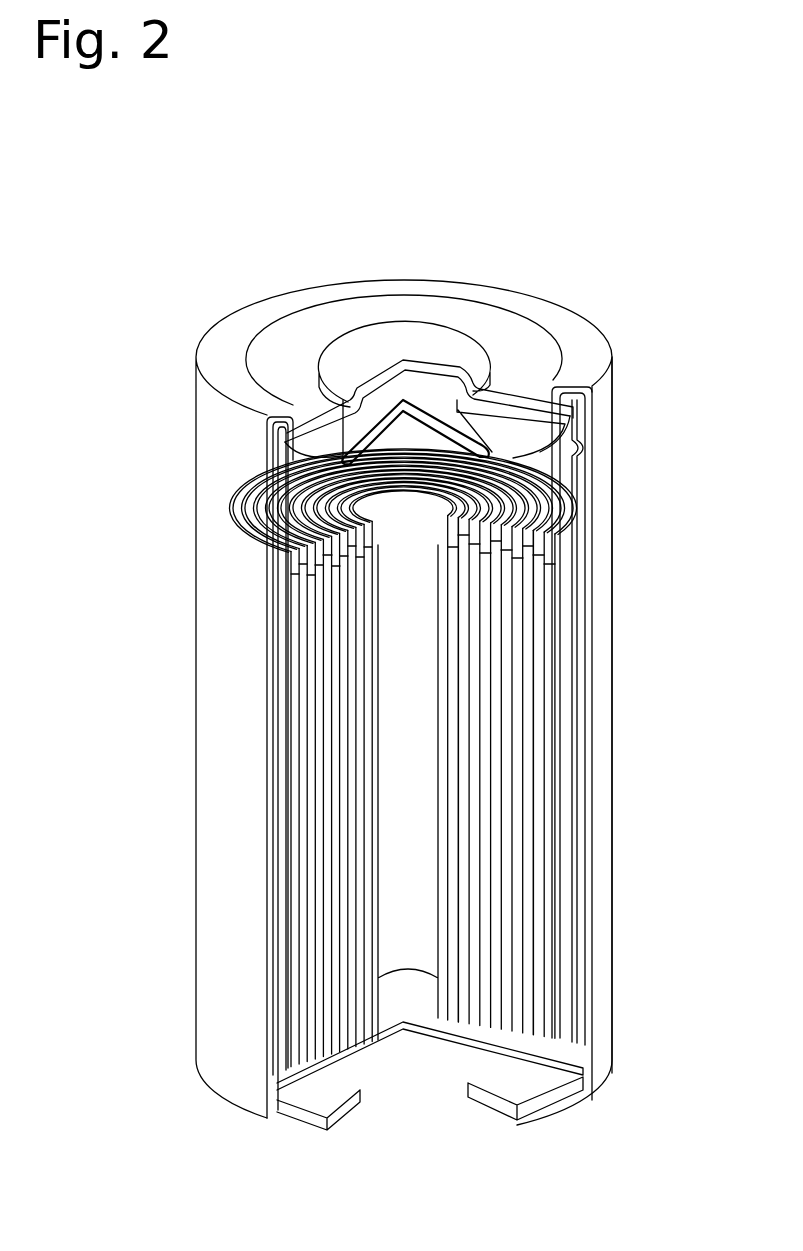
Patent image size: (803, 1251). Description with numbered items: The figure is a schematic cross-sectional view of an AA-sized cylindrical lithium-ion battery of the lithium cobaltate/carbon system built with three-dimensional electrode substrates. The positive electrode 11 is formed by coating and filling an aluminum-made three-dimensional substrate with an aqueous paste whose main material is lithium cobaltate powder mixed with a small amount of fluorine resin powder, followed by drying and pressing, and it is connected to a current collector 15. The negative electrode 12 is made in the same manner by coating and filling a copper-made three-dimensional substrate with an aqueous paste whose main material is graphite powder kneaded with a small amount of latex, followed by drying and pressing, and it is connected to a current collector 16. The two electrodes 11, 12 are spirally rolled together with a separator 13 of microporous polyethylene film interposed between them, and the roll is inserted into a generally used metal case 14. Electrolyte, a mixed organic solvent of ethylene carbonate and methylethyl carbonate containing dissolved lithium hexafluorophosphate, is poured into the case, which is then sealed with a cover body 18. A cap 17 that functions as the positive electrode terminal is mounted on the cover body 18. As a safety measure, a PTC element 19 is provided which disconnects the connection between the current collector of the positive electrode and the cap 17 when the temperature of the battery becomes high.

The positive electrode 11 is at (568, 627).
The negative electrode 12 is at (548, 667).
The separator 13 is at (562, 581).
The metal case 14 is at (198, 557).
The current collector 15 is at (583, 452).
The current collector 16 is at (495, 1044).
The cap 17 is at (380, 338).
The cover body 18 is at (438, 390).
The PTC element 19 is at (513, 407).